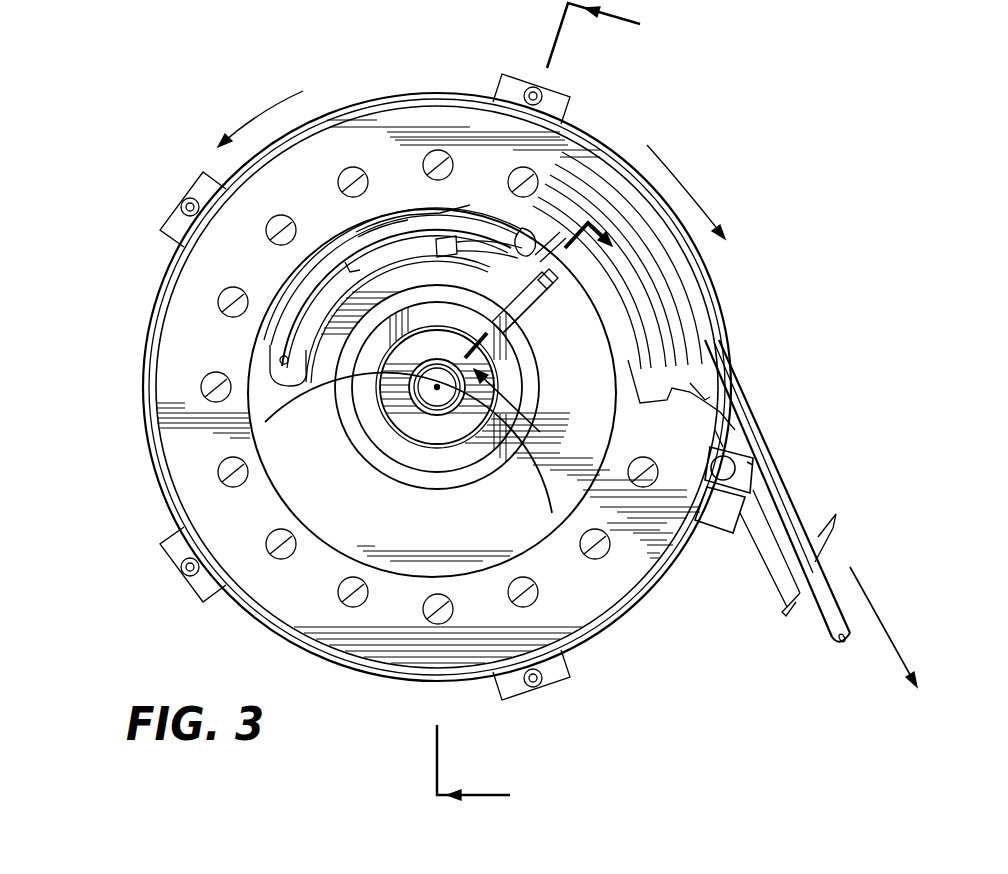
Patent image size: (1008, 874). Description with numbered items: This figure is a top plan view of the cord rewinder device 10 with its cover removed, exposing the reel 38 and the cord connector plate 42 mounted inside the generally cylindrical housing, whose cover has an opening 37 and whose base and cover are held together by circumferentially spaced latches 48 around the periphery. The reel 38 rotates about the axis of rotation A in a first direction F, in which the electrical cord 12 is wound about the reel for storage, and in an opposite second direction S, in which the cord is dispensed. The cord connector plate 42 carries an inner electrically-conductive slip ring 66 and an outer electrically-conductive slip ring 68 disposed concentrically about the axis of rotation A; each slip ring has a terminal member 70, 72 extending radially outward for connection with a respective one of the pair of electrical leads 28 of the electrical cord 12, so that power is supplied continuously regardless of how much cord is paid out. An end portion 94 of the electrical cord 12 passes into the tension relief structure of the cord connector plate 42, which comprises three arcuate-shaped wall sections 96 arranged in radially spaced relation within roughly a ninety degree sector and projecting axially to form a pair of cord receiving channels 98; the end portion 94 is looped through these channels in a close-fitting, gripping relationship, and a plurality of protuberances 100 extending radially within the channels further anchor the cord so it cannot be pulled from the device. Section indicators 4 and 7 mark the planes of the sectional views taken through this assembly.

The cord rewinder device 10 is at (137, 473).
The electrical cord 12 is at (438, 214).
The electrical leads 28 is at (556, 252).
The opening 37 is at (545, 545).
The reel 38 is at (385, 136).
The cord connector plate 42 is at (448, 537).
The latches 48 is at (572, 110).
The inner electrically-conductive slip ring 66 is at (393, 417).
The outer electrically-conductive slip ring 68 is at (400, 447).
The terminal member 70 is at (543, 285).
The terminal member 72 is at (525, 315).
The end portion 94 is at (448, 256).
The arcuate-shaped wall sections 96 is at (298, 352).
The cord receiving channels 98 is at (323, 298).
The protuberances 100 is at (350, 270).
The section line 4- 4 is at (550, 409).
The section line 7- 7 is at (553, 337).
The axis of rotation A is at (435, 388).
The first direction F is at (303, 91).
The second direction S is at (712, 196).